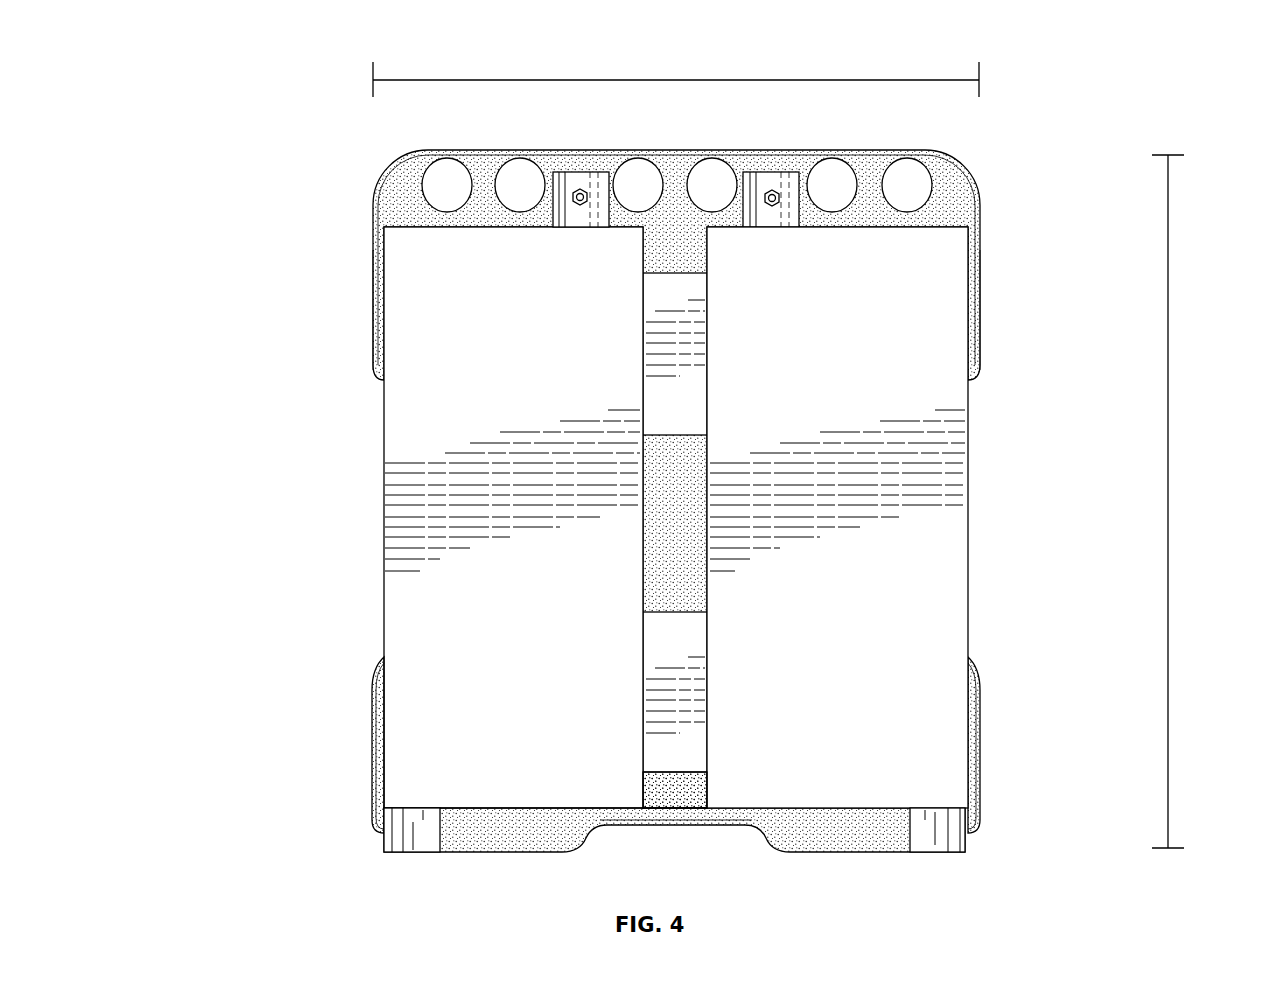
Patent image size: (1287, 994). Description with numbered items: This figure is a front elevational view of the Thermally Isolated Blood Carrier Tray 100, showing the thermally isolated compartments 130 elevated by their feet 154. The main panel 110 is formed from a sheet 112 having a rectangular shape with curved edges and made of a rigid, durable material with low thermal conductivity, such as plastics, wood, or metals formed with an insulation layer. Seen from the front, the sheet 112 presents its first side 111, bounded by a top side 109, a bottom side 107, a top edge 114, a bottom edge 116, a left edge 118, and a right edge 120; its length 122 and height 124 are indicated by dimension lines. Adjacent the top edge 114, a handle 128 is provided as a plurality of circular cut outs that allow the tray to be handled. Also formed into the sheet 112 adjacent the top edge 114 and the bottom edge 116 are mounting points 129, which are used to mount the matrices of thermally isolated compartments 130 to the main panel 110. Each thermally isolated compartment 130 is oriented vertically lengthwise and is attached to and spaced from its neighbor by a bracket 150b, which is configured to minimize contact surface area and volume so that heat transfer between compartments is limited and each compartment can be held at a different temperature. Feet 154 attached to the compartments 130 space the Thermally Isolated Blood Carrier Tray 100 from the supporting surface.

The Thermally Isolated Blood Carrier Tray 100 is at (214, 130).
The bottom side 107 is at (978, 812).
The top side 109 is at (965, 193).
The main panel 110 is at (385, 181).
The first side 111 is at (806, 167).
The sheet 112 is at (678, 163).
The top edge 114 is at (618, 165).
The bottom edge 116 is at (488, 852).
The left edge 118 is at (372, 348).
The right edge 120 is at (980, 348).
The length 122 is at (668, 80).
The height 124 is at (1168, 472).
The handle 128 is at (916, 173).
The mounting points 129 is at (580, 190).
The thermally isolated compartment 130 is at (950, 568).
The bracket 150b is at (682, 768).
The feet 154 is at (960, 840).